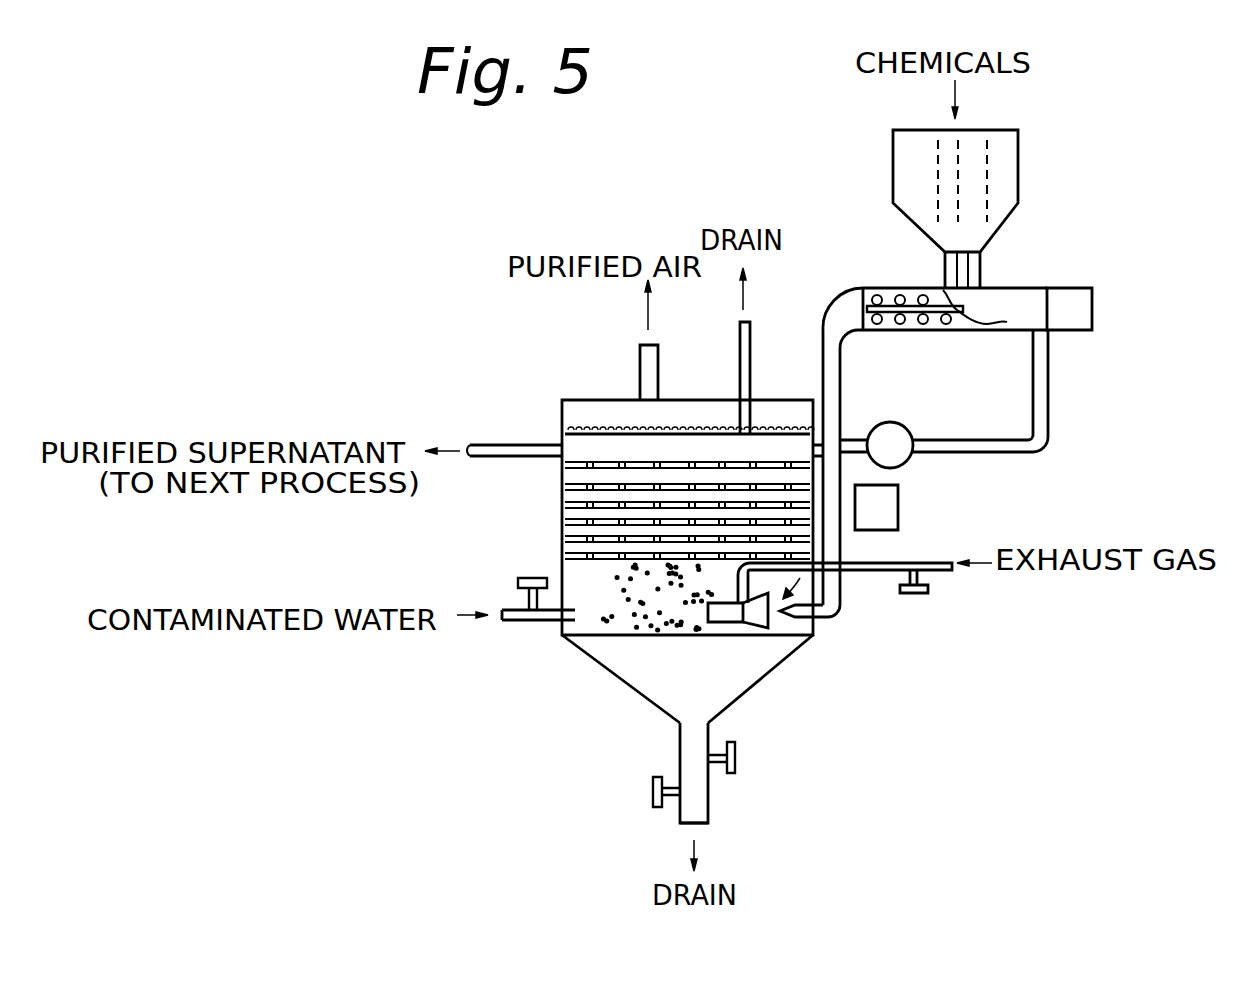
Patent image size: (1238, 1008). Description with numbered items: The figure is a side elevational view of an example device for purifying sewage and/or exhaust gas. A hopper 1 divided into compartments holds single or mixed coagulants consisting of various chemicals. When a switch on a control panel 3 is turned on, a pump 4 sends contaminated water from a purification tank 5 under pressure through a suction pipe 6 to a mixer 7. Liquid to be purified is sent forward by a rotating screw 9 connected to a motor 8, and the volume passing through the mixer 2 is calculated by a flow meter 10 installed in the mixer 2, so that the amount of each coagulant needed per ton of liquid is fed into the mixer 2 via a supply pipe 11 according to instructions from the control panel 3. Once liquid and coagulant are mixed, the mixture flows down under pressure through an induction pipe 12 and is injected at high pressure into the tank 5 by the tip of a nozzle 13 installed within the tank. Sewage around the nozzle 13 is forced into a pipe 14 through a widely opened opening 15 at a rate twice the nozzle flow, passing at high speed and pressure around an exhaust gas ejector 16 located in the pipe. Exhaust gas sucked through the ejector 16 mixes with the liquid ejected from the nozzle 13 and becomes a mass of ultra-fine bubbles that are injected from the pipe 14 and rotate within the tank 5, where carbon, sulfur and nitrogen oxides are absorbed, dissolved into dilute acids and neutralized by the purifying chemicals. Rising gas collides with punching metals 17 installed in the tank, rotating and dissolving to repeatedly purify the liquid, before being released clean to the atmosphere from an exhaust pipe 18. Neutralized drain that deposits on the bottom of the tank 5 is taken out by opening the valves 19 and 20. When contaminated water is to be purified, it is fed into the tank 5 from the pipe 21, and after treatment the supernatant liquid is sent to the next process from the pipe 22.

The hopper 1 is at (1020, 148).
The mixer 2 is at (1001, 82).
The control panel 3 is at (900, 518).
The pump 4 is at (892, 424).
The purification tank 5 is at (562, 535).
The suction pipe 6 is at (1052, 432).
The mixer 7 is at (1005, 330).
The motor 8 is at (1075, 288).
The screw 9 is at (878, 296).
The flow meter 10 is at (962, 318).
The chemical feed neck 11 is at (943, 270).
The induction pipe 12 is at (842, 600).
The nozzle 13 is at (800, 622).
The pipe 14 is at (720, 622).
The widely opened opening 15 is at (755, 622).
The exhaust gas ejector 16 is at (738, 622).
The punching metals 17 is at (562, 483).
The exhaust pipe 18 is at (638, 363).
The valve 19 is at (735, 772).
The valve 20 is at (653, 807).
The pipe 21 is at (557, 620).
The pipe 22 is at (523, 445).